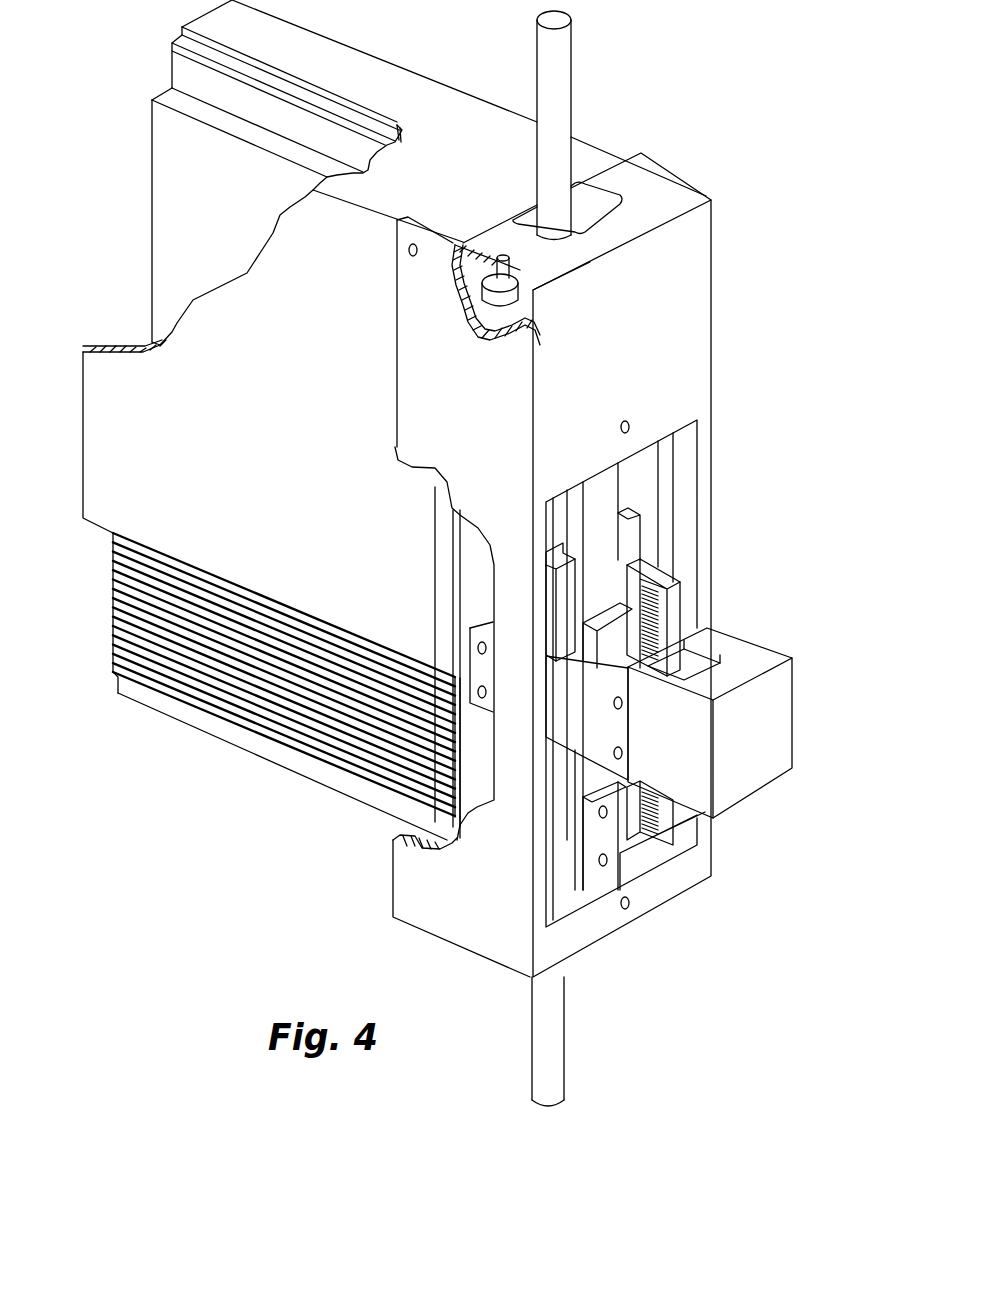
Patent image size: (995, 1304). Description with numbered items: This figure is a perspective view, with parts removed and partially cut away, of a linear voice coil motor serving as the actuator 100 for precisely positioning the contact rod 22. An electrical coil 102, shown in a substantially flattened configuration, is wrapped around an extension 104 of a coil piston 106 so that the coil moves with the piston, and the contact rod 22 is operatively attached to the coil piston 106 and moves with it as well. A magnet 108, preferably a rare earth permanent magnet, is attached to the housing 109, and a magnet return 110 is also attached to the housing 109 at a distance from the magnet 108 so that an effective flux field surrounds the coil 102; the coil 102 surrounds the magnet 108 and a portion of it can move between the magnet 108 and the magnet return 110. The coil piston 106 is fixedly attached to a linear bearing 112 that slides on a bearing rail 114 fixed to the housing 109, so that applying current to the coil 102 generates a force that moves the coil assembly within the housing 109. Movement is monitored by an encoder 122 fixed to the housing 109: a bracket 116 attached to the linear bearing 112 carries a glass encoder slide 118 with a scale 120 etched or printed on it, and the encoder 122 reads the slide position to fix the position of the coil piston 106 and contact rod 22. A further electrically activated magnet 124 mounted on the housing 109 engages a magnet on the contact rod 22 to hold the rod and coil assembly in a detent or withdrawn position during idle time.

The contact rod 22 is at (568, 53).
The actuator 100 is at (745, 312).
The electrical coil 102 is at (132, 623).
The extension 104 is at (197, 717).
The coil piston 106 is at (377, 812).
The magnet 108 is at (168, 143).
The housing 109 is at (378, 52).
The magnet return 110 is at (97, 371).
The linear bearing 112 is at (567, 587).
The bearing rail 114 is at (605, 482).
The bracket 116 is at (703, 848).
The glass encoder slide 118 is at (663, 570).
The scale 120 is at (665, 650).
The encoder 122 is at (760, 653).
The magnet 124 is at (505, 292).